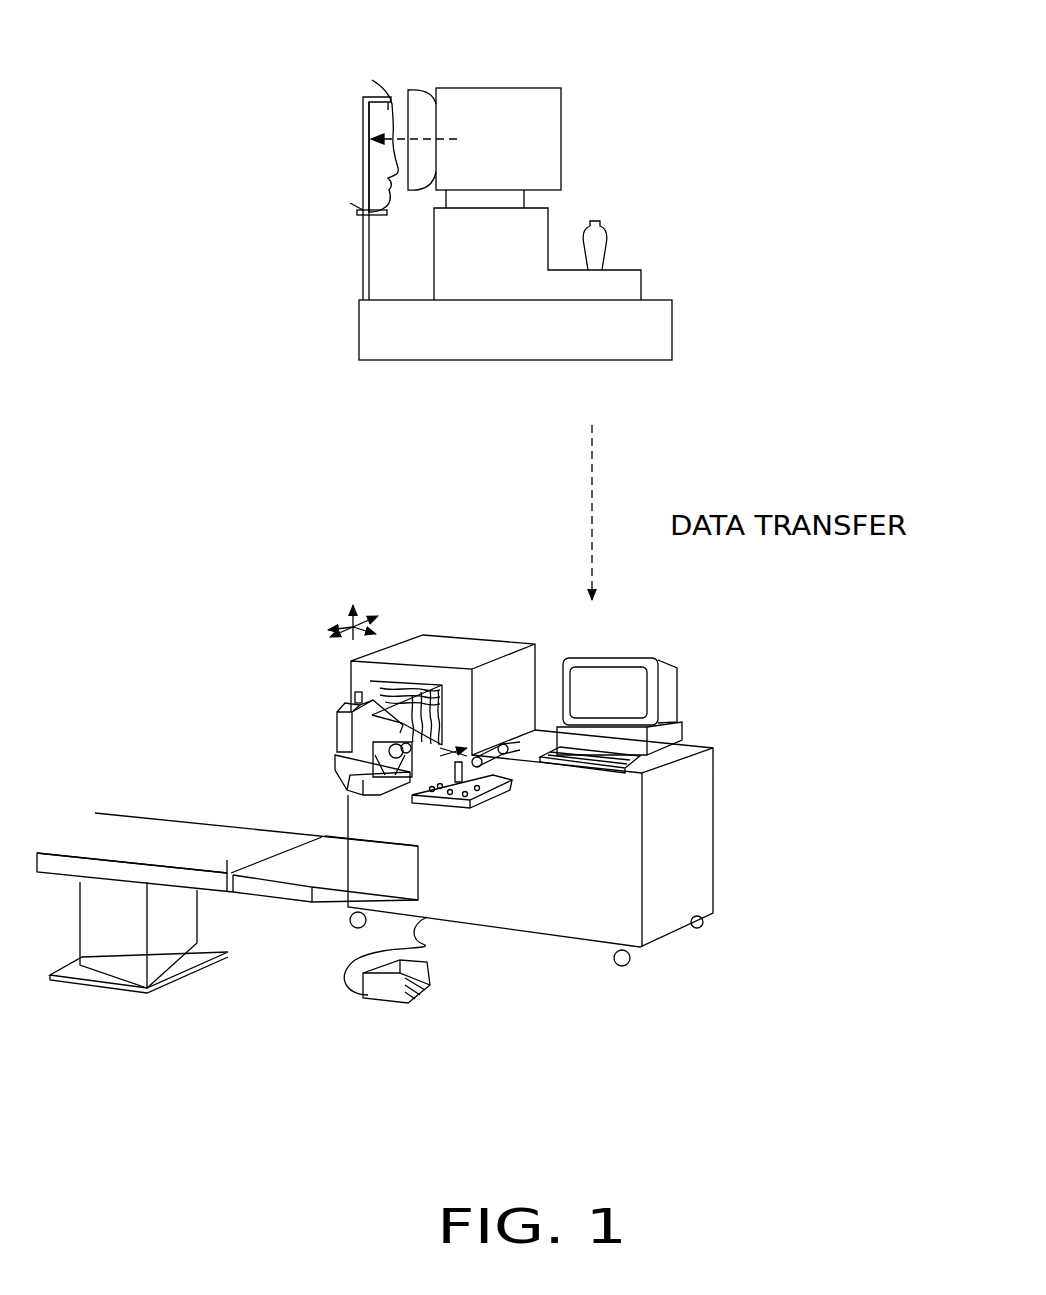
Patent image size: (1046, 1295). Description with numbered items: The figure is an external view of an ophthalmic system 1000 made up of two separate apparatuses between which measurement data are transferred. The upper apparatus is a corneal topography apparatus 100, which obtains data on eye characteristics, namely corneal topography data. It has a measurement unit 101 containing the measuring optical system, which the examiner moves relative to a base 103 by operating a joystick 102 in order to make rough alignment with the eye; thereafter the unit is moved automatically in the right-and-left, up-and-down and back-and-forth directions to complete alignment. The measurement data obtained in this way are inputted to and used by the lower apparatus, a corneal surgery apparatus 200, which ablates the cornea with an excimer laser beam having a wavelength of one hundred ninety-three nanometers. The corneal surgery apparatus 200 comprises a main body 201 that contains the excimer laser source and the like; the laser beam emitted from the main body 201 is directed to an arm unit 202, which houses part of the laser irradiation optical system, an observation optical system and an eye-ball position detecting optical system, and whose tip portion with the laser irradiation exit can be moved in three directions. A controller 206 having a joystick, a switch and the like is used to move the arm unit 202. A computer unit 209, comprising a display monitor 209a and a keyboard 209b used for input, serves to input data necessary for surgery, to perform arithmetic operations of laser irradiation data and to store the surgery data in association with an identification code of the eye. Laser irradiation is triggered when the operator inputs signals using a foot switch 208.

The corneal topography apparatus 100 is at (638, 134).
The measurement unit 101 is at (465, 103).
The joystick 102 is at (607, 246).
The base 103 is at (655, 325).
The ophthalmic system 1000 is at (323, 520).
The corneal surgery apparatus 200 is at (300, 640).
The main body 201 is at (565, 930).
The arm unit 202 is at (308, 742).
The controller 206 is at (510, 785).
The foot switch 208 is at (420, 978).
The computer unit 209 is at (715, 707).
The display monitor 209a is at (633, 682).
The keyboard 209b is at (640, 760).